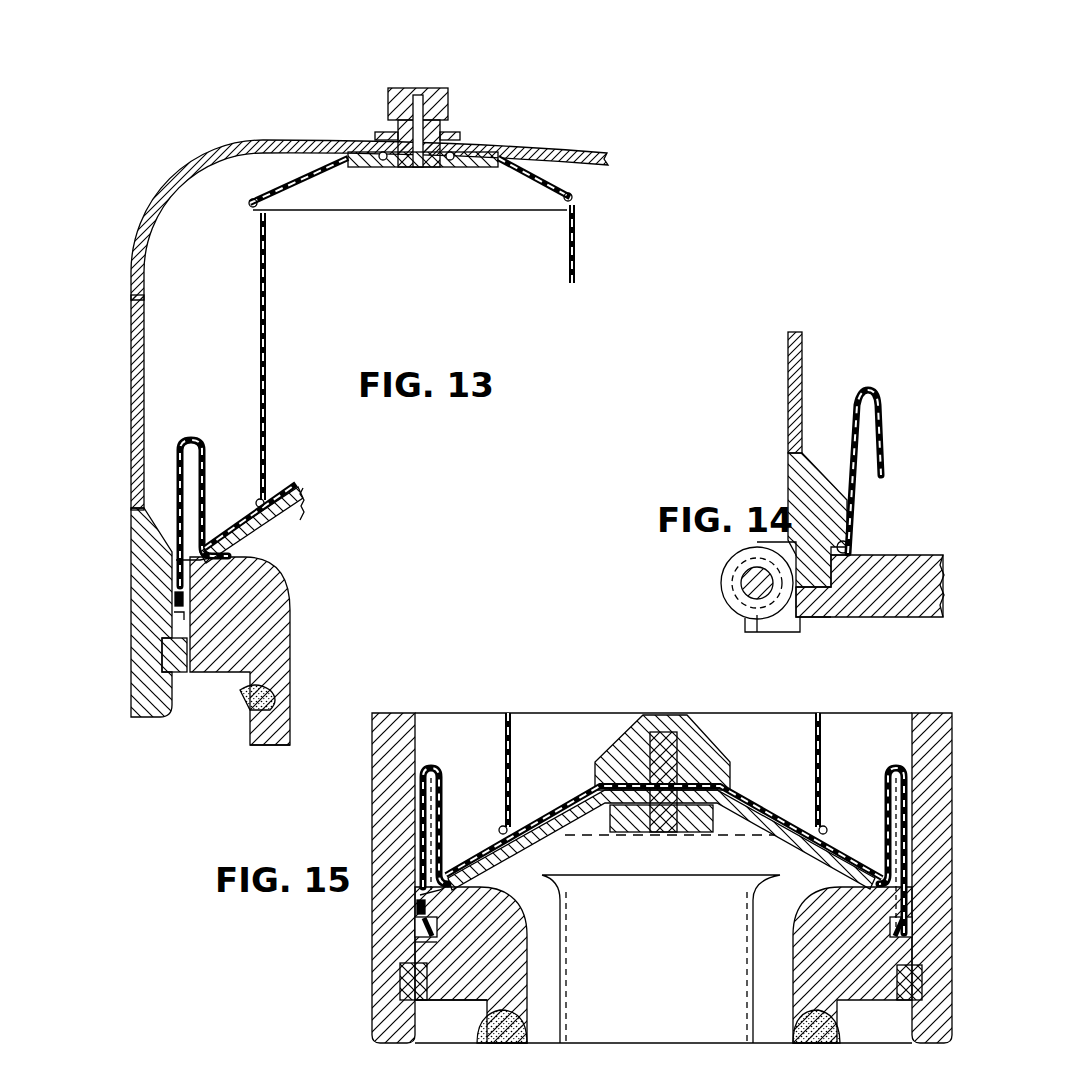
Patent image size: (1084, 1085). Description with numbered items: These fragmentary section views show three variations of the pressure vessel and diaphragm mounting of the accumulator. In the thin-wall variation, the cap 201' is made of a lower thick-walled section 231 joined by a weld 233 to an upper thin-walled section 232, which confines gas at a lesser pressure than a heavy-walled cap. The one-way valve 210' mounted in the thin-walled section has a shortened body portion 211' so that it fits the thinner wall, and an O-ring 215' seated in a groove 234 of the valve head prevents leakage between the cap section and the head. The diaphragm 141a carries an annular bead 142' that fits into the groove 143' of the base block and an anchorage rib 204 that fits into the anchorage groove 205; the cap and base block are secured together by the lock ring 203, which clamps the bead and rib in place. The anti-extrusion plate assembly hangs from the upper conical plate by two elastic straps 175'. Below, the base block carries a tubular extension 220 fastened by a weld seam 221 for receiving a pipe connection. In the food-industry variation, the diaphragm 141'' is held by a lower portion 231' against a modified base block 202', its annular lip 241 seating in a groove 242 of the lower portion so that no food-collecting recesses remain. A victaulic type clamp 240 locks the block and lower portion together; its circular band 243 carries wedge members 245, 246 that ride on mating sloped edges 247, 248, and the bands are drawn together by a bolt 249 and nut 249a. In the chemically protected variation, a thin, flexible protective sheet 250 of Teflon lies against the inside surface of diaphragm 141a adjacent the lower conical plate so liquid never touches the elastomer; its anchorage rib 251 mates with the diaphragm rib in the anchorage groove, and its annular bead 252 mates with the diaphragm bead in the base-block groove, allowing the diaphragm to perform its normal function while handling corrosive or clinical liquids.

In FIG. 13, the diaphragm 141a is at (194, 437).
In FIG. 15, the diaphragm 141a is at (430, 766).
In FIG. 14, the diaphragm 141'' is at (883, 453).
In FIG. 13, the annular bead 142' is at (120, 605).
In FIG. 15, the annular bead 142' is at (365, 951).
In FIG. 13, the groove 143' is at (121, 629).
In FIG. 15, the groove 143' is at (493, 958).
In FIG. 13, the elastic straps 175' is at (414, 356).
In FIG. 15, the elastic straps 175' is at (663, 773).
In FIG. 13, the cap 201' is at (95, 402).
In FIG. 14, the base block 202' is at (920, 615).
In FIG. 13, the lock ring 203 is at (170, 653).
In FIG. 13, the anchorage rib 204 is at (178, 574).
In FIG. 15, the anchorage rib 204 is at (420, 900).
In FIG. 13, the anchorage groove 205 is at (215, 566).
In FIG. 15, the anchorage groove 205 is at (420, 935).
In FIG. 13, the one-way valve 210' is at (461, 127).
In FIG. 13, the body portion 211' is at (389, 115).
In FIG. 13, the O-ring 215' is at (423, 177).
In FIG. 13, the tubular extension 220 is at (268, 746).
In FIG. 13, the weld seam 221 is at (245, 703).
In FIG. 13, the lower thick-walled section 231 is at (117, 612).
In FIG. 14, the lower portion 231' is at (783, 459).
In FIG. 13, the upper thin-walled section 232 is at (134, 258).
In FIG. 13, the weld 233 is at (140, 508).
In FIG. 13, the groove 234 is at (385, 160).
In FIG. 14, the victaulic type clamp 240 is at (710, 593).
In FIG. 14, the annular lip 241 is at (842, 553).
In FIG. 14, the groove 242 is at (850, 540).
In FIG. 14, the circular band 243 is at (752, 618).
In FIG. 14, the wedge member 245 is at (757, 544).
In FIG. 14, the wedge member 246 is at (805, 620).
In FIG. 14, the sloped edge 247 is at (748, 563).
In FIG. 14, the sloped edge 248 is at (830, 612).
In FIG. 14, the bolt 249 is at (745, 597).
In FIG. 14, the nut 249a is at (762, 635).
In FIG. 15, the protective flexible sheet 250 is at (538, 846).
In FIG. 15, the anchorage rib 251 is at (448, 889).
In FIG. 15, the annular bead 252 is at (432, 928).